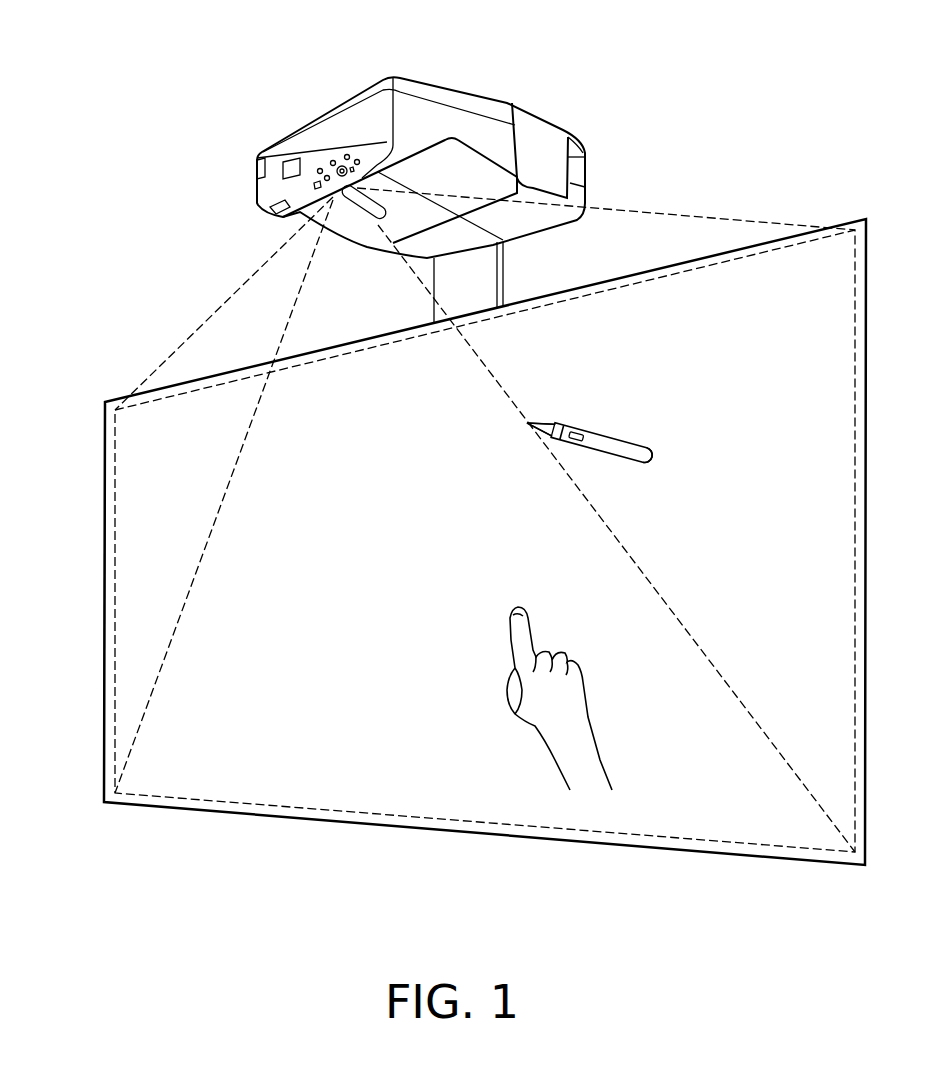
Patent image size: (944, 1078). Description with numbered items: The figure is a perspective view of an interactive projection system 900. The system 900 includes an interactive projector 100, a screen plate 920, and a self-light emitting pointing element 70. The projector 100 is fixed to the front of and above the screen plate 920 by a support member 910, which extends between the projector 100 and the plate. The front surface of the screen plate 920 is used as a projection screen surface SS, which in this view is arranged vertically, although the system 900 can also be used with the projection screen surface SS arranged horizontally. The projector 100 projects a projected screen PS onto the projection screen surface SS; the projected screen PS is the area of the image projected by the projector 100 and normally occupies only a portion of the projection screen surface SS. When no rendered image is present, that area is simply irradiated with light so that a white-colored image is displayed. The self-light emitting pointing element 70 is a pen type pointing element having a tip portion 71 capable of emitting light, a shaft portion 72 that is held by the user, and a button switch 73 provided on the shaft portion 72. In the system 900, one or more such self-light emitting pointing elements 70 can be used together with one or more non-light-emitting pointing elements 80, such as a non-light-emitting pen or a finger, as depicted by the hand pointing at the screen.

The interactive projection system 900 is at (142, 131).
The interactive projector 100 is at (453, 80).
The support member 910 is at (507, 268).
The screen plate 920 is at (846, 218).
The projected screen PS is at (105, 463).
The projection screen surface SS is at (105, 603).
The self-light emitting pointing element 70 is at (602, 430).
The tip portion 71 is at (528, 421).
The shaft portion 72 is at (633, 462).
The button switch 73 is at (576, 438).
The non-light-emitting pointing element 80 is at (519, 637).